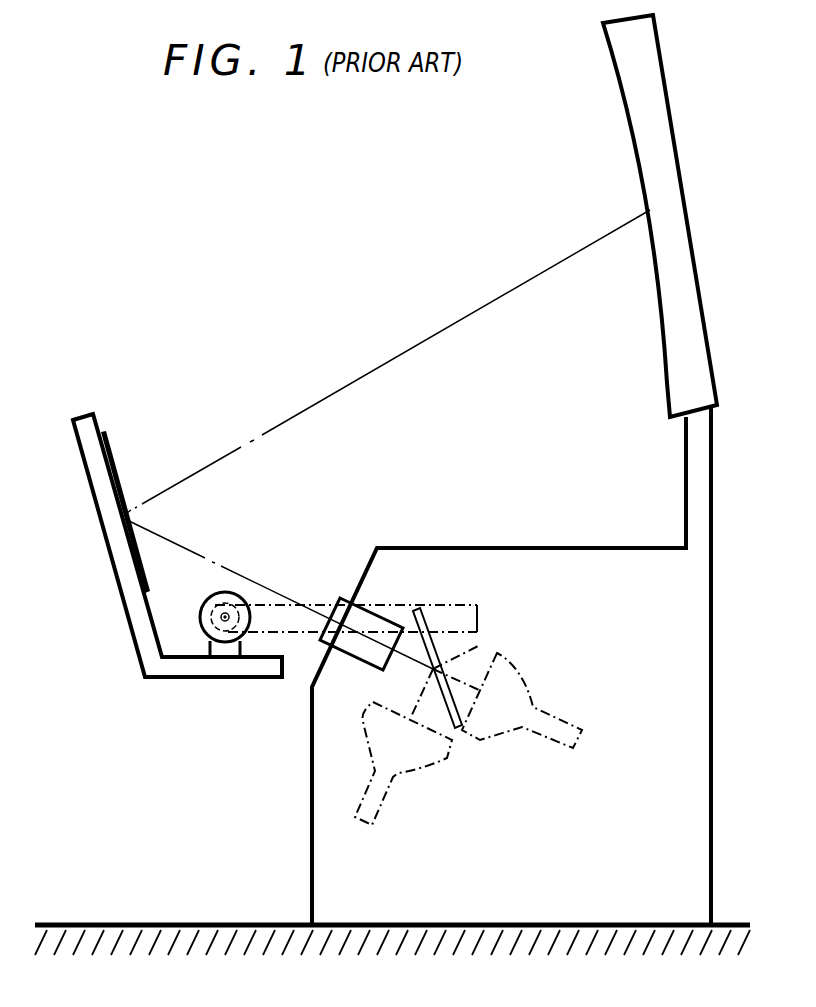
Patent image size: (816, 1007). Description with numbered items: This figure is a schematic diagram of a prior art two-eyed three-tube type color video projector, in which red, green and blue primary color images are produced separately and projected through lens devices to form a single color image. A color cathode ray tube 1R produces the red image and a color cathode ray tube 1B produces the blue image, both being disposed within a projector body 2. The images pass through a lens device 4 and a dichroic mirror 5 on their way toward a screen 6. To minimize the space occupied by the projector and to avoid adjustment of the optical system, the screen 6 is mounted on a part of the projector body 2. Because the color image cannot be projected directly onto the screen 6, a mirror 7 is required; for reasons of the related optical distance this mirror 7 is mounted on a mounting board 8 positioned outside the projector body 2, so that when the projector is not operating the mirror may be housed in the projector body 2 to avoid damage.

The color cathode ray tube 1R is at (543, 711).
The color cathode ray tube 1B is at (405, 775).
The projector body 2 is at (711, 719).
The lens device 4 is at (362, 665).
The dichroic mirror 5 is at (480, 646).
The screen 6 is at (631, 87).
The mirror 7 is at (118, 478).
The mounting board 8 is at (110, 518).